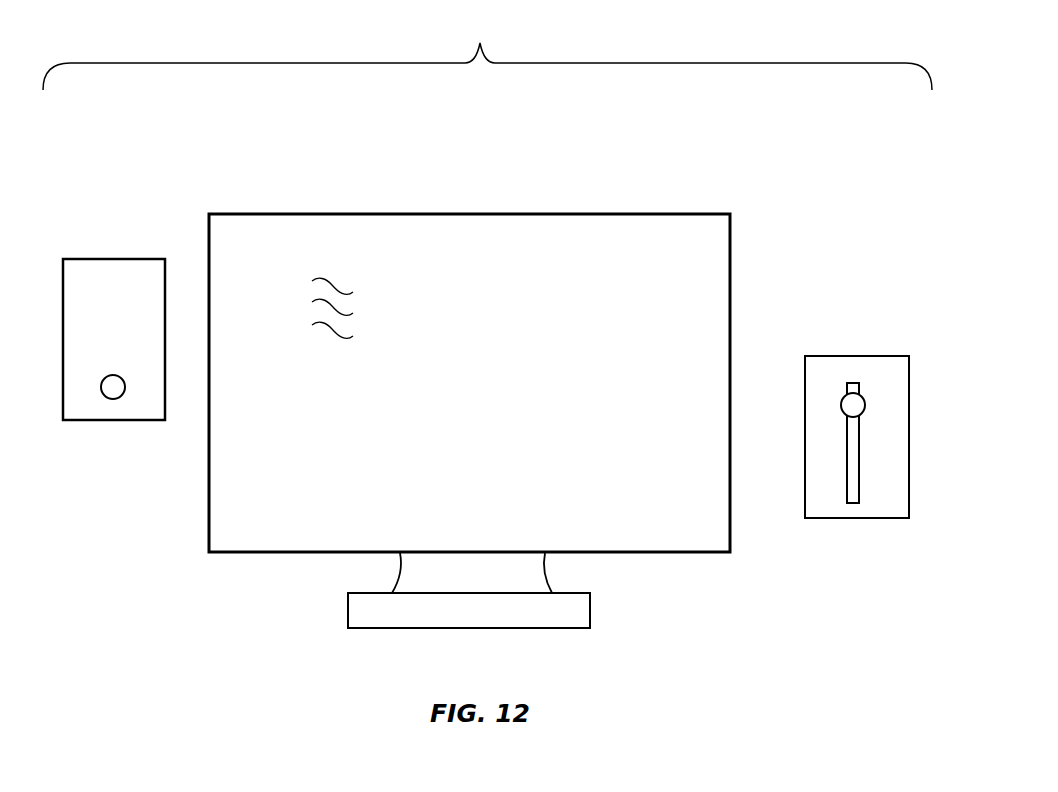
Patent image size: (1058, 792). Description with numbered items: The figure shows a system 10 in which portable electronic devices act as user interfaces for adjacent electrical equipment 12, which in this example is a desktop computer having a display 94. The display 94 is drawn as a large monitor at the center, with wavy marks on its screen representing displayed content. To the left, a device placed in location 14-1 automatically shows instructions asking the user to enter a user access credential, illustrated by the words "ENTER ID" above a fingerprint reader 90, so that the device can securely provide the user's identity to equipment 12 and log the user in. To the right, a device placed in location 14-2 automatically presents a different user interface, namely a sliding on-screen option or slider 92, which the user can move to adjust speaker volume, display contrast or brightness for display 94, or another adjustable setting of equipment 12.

The system 10 is at (487, 54).
The equipment 12 is at (361, 213).
The display 94 is at (480, 226).
The location 14-1 is at (75, 258).
The fingerprint reader 90 is at (116, 399).
The location 14-2 is at (878, 520).
The slider 92 is at (865, 407).